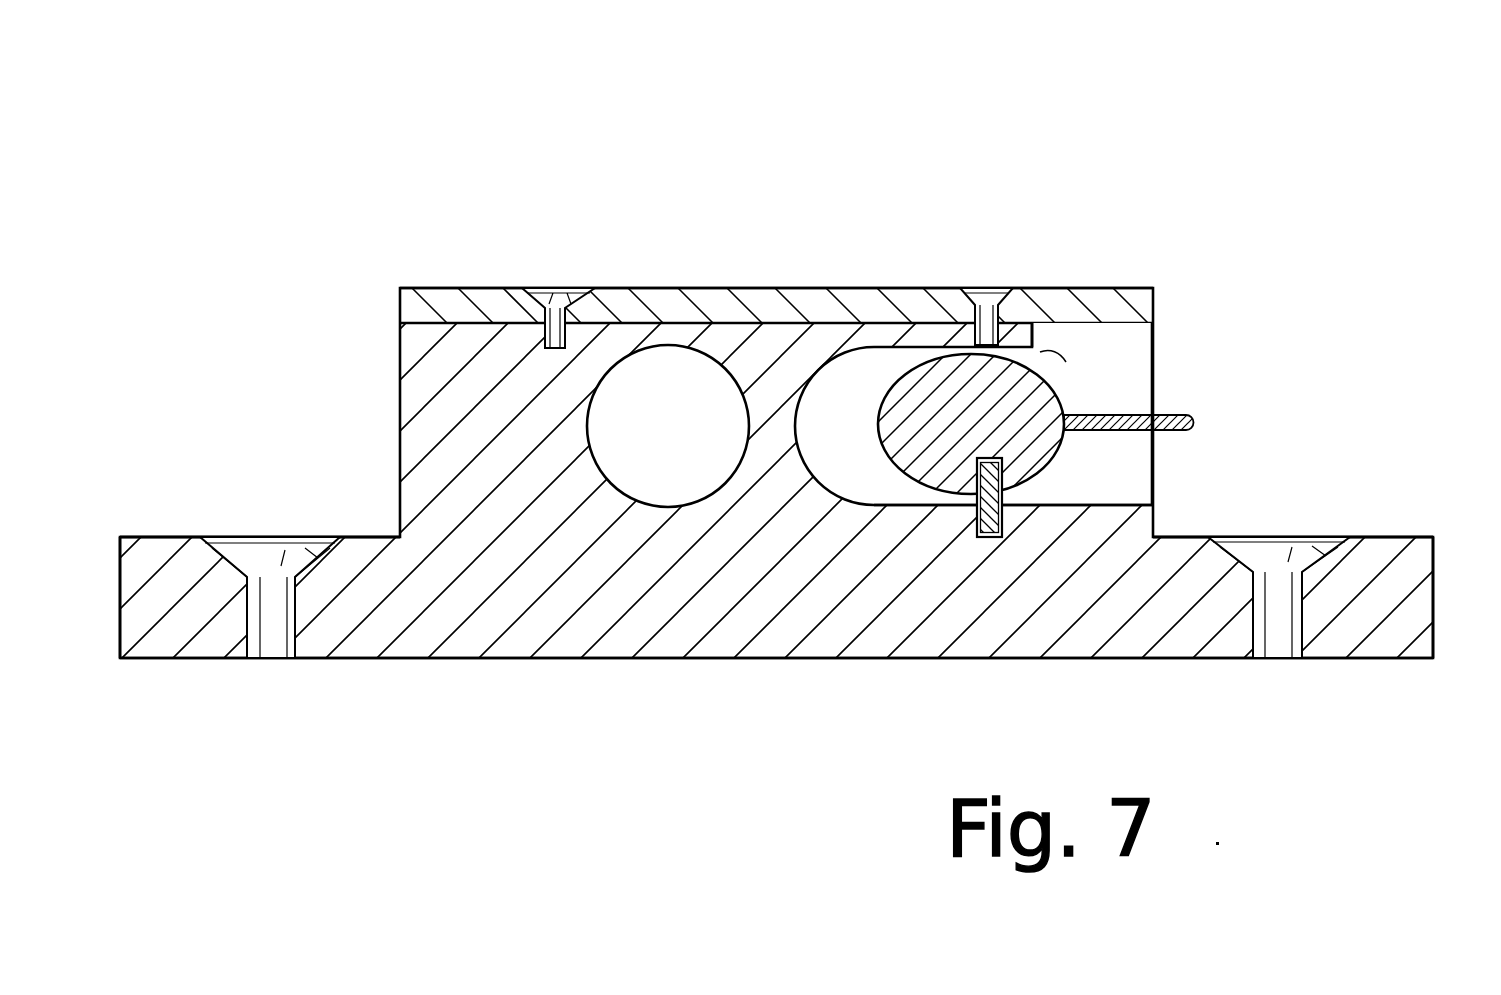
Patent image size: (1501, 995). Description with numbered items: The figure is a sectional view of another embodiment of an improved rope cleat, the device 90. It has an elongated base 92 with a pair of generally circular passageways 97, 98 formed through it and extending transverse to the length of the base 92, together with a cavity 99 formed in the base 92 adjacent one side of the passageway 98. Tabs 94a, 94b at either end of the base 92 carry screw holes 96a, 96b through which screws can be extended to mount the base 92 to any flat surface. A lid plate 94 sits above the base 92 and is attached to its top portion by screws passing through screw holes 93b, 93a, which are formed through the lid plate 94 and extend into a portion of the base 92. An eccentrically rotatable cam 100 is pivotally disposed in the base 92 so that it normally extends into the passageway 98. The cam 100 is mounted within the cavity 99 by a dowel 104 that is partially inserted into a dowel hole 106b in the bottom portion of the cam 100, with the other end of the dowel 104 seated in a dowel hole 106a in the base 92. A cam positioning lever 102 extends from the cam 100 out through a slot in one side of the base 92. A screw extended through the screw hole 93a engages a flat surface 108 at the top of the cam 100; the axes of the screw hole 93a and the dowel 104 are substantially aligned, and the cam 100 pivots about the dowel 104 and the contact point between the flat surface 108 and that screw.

The device 90 is at (828, 142).
The base 92 is at (473, 666).
The lid plate 94 is at (421, 288).
The tab 94a is at (1393, 535).
The tab 94b is at (160, 555).
The screw hole 93a is at (1000, 288).
The screw hole 93b is at (560, 288).
The screw hole 96a is at (1303, 622).
The screw hole 96b is at (292, 637).
The passageway 97 is at (690, 345).
The passageway 98 is at (830, 347).
The cavity 99 is at (1127, 352).
The cam 100 is at (1047, 478).
The cam positioning lever 102 is at (1193, 422).
The dowel 104 is at (977, 525).
The dowel hole 106a is at (1013, 520).
The dowel hole 106b is at (933, 508).
The flat surface 108 is at (1015, 365).